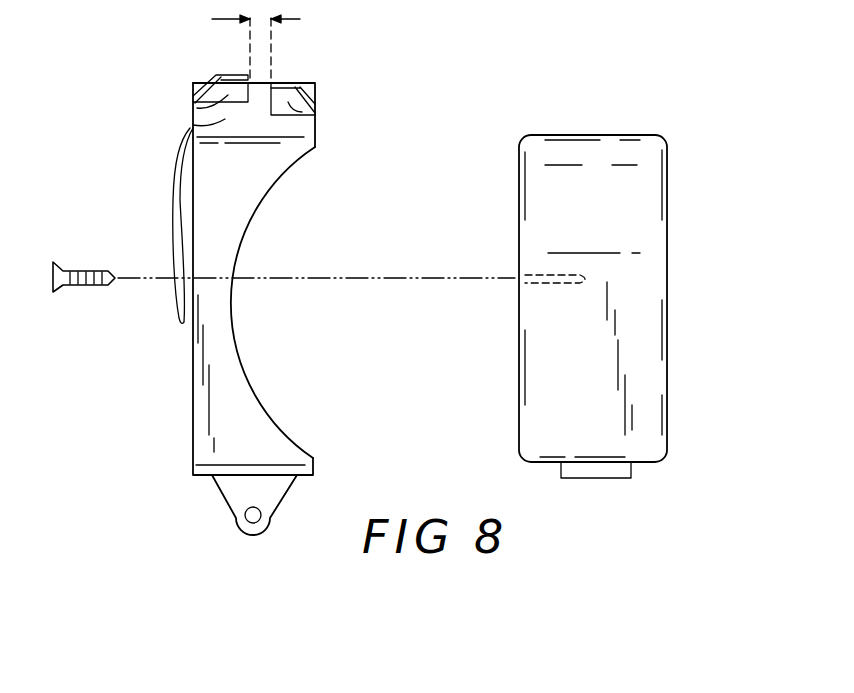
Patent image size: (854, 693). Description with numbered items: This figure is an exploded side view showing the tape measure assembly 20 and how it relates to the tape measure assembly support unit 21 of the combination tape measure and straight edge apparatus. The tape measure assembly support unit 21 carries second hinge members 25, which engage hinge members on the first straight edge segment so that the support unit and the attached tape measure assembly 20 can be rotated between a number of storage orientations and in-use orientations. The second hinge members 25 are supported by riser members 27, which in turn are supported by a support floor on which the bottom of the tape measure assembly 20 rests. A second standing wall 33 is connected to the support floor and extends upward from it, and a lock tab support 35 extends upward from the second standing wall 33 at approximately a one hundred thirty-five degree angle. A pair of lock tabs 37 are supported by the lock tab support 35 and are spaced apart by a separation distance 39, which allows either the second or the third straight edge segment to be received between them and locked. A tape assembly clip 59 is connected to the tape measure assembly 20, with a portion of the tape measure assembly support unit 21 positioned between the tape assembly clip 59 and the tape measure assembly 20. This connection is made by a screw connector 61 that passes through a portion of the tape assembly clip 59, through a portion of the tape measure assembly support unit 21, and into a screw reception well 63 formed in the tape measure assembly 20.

The tape measure assembly 20 is at (667, 290).
The tape measure assembly support unit 21 is at (178, 93).
The second hinge members 25 is at (245, 517).
The riser members 27 is at (265, 490).
The second standing wall 33 is at (237, 200).
The lock tab support 35 is at (193, 125).
The lock tabs 37 is at (193, 102).
The separation distance 39 is at (279, 41).
The tape assembly clip 59 is at (173, 198).
The screw connector 61 is at (65, 292).
The screw reception well 63 is at (547, 286).